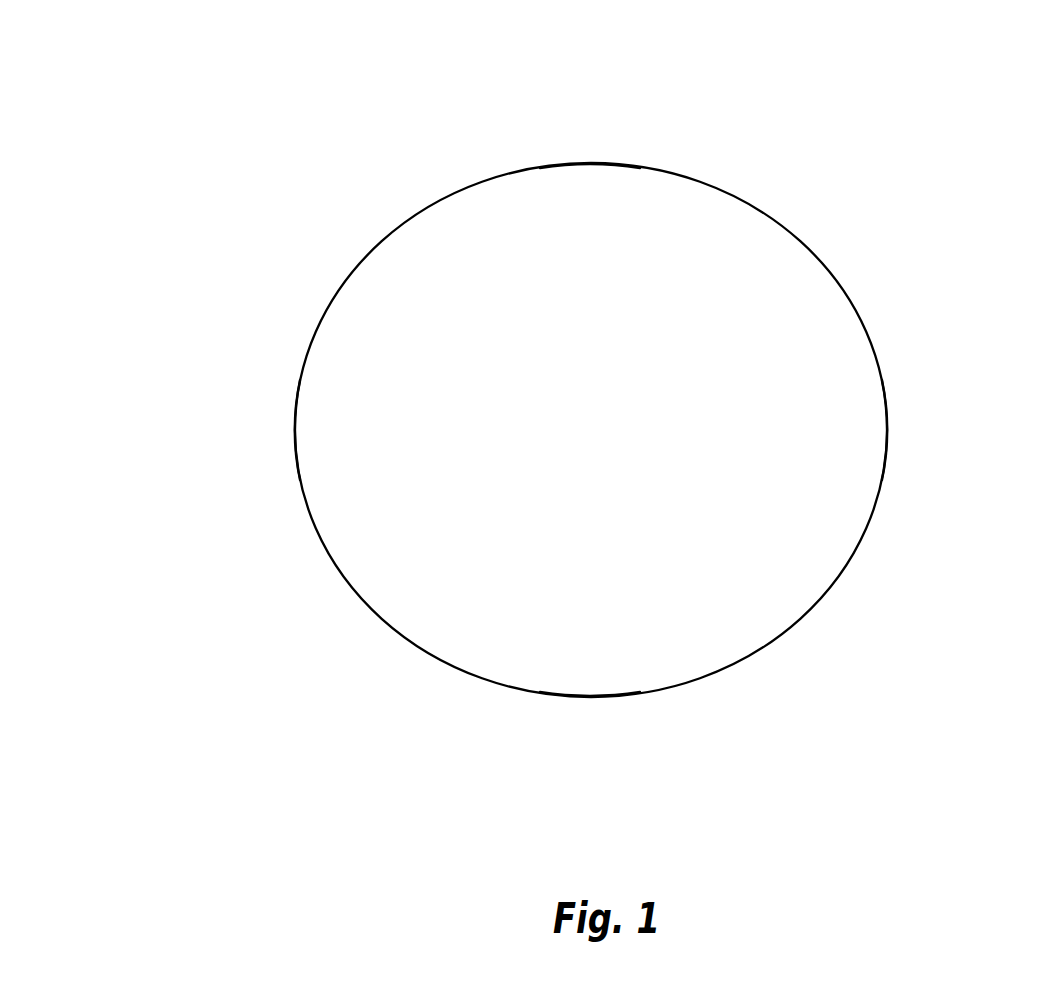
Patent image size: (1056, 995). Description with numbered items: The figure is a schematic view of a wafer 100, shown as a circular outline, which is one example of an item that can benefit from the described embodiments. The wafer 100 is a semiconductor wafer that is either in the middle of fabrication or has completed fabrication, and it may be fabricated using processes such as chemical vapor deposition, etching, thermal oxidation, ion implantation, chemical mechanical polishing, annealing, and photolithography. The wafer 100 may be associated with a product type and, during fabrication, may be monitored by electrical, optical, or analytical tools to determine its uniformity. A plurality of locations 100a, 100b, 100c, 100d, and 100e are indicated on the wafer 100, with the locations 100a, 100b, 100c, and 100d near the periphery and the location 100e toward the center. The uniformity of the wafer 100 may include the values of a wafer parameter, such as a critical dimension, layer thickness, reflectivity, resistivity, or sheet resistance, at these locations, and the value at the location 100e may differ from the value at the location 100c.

The wafer 100 is at (356, 258).
The location 100a is at (597, 230).
The location 100b is at (851, 437).
The location 100c is at (589, 629).
The location 100d is at (364, 447).
The location 100e is at (609, 412).